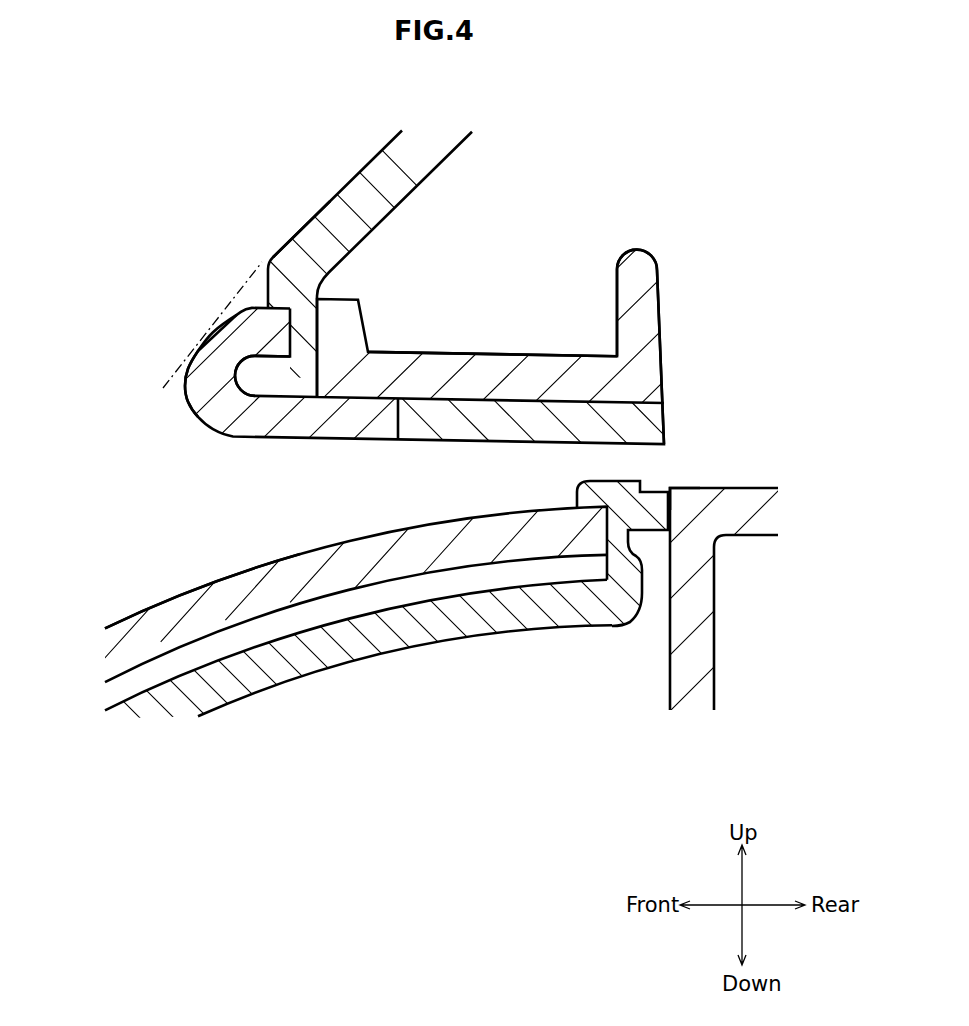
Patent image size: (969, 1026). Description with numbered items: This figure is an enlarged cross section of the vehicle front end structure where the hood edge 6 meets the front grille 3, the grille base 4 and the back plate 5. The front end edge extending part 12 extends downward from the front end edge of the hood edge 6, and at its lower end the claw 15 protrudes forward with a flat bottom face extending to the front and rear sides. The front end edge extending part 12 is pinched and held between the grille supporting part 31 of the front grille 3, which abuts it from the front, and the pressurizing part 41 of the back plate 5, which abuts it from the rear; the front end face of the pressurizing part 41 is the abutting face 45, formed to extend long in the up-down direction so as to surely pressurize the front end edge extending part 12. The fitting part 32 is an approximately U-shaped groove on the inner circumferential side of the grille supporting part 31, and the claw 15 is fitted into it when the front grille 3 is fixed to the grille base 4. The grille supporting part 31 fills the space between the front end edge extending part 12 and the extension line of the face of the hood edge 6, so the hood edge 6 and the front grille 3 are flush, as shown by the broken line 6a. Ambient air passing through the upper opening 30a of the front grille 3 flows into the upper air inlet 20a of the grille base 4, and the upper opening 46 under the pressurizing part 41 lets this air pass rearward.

The front grille 3 is at (318, 448).
The grille base 4 is at (487, 439).
The back plate 5 is at (590, 234).
The hood edge 6 is at (347, 183).
The broken line 6a is at (180, 375).
The front end edge extending part 12 is at (290, 345).
The claw 15 is at (248, 356).
The upper air inlet 20a is at (661, 462).
The upper opening 30a is at (245, 514).
The grille supporting part 31 is at (190, 405).
The fitting part 32 is at (280, 382).
The pressurizing part 41 is at (452, 352).
The abutting face 45 is at (306, 320).
The upper opening 46 is at (727, 407).